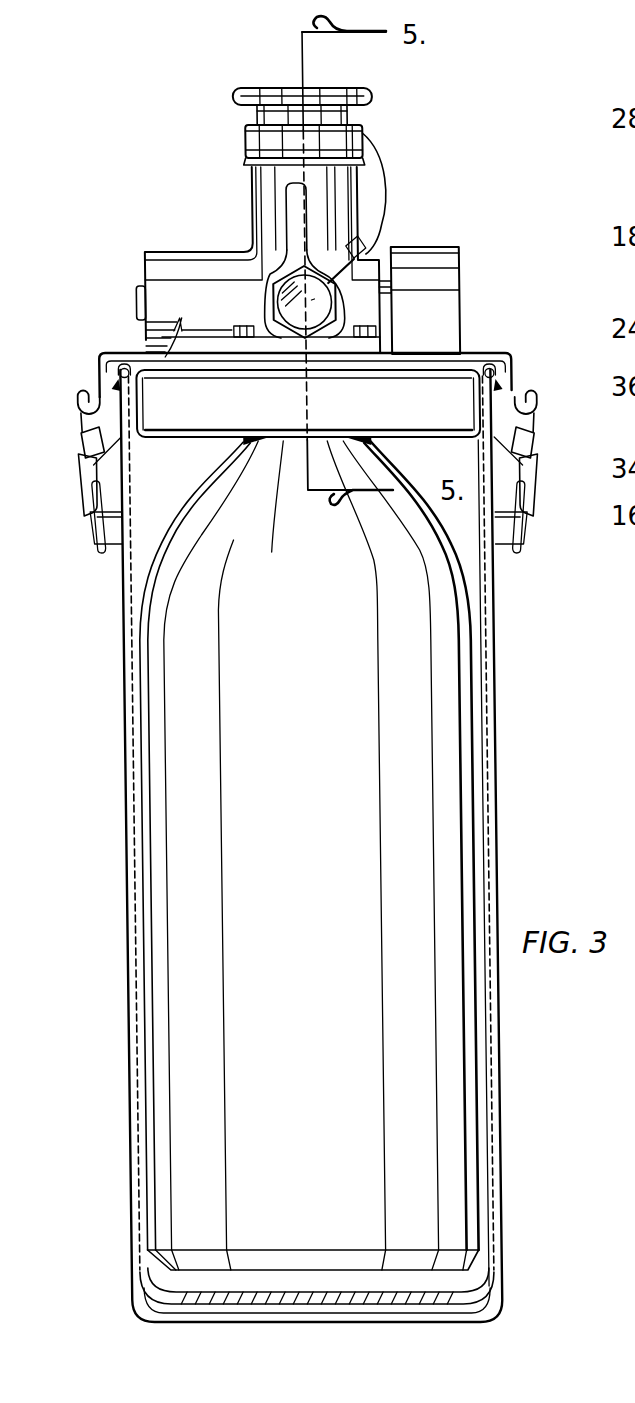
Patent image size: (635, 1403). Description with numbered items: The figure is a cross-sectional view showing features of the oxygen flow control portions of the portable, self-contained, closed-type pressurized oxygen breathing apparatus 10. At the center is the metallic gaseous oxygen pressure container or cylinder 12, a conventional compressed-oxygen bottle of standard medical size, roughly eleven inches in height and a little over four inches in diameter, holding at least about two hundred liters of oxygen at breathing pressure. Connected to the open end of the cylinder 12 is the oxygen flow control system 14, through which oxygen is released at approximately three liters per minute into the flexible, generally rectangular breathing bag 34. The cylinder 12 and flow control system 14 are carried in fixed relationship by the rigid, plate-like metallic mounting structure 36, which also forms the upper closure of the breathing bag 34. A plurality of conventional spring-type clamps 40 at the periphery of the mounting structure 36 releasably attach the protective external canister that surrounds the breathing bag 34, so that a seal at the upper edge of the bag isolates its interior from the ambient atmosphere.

The breathing apparatus 10 is at (104, 313).
The oxygen cylinder 12 is at (175, 676).
The oxygen flow control system 14 is at (209, 221).
The mounting structure 36 is at (478, 348).
The clamps 40 is at (535, 361).
The breathing bag 34 is at (147, 1288).